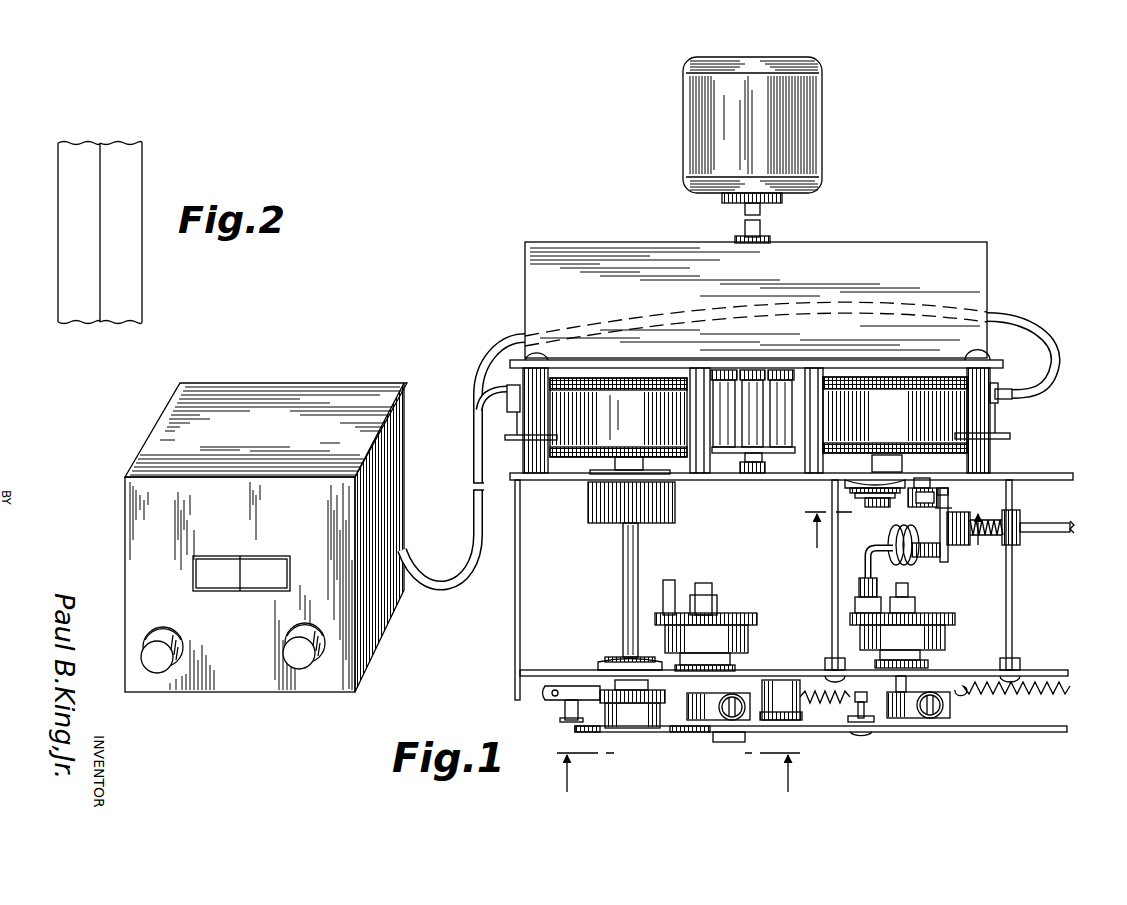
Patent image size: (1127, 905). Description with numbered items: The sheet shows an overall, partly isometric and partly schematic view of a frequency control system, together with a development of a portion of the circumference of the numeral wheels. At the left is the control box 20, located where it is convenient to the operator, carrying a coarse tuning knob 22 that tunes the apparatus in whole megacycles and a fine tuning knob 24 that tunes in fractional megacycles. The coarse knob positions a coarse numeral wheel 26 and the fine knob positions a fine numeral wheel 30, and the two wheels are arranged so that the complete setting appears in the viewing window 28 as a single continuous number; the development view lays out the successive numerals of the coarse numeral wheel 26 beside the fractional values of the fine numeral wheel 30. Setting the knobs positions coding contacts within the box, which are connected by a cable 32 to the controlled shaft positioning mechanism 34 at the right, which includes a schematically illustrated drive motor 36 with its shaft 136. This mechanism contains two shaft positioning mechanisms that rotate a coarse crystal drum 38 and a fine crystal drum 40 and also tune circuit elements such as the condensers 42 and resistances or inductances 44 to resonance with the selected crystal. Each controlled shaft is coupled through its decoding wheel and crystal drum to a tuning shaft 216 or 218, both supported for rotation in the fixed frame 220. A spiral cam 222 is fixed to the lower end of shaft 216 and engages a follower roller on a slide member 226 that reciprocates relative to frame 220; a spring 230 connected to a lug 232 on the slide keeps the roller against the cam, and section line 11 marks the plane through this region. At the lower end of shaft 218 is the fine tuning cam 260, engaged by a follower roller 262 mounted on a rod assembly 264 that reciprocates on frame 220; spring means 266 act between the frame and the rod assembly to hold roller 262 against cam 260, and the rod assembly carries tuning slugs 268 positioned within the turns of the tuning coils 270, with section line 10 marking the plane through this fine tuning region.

In FIG. 1, the section line 10- 10 is at (893, 539).
In FIG. 1, the section line 11- 11 is at (678, 772).
In FIG. 1, the control box 20 is at (266, 523).
In FIG. 1, the coarse tuning knob 22 is at (163, 625).
In FIG. 1, the fine tuning knob 24 is at (315, 620).
In FIG. 2, the coarse numeral wheel 26 is at (58, 286).
In FIG. 1, the coarse numeral wheel 26 is at (216, 548).
In FIG. 1, the viewing window 28 is at (241, 578).
In FIG. 2, the fine numeral wheel 30 is at (142, 294).
In FIG. 1, the fine numeral wheel 30 is at (274, 548).
In FIG. 1, the cable 32 is at (463, 440).
In FIG. 1, the controlled shaft positioning mechanism 34 is at (900, 246).
In FIG. 1, the drive motor 36 is at (826, 124).
In FIG. 1, the motor shaft 136 is at (761, 232).
In FIG. 1, the coarse crystal drum 38 is at (636, 428).
In FIG. 1, the fine crystal drum 40 is at (898, 425).
In FIG. 1, the condensers 42 is at (938, 637).
In FIG. 1, the resistances or inductances 44 is at (903, 562).
In FIG. 1, the tuning shaft 216 is at (622, 570).
In FIG. 1, the tuning shaft 218 is at (876, 512).
In FIG. 1, the fixed frame 220 is at (1013, 573).
In FIG. 1, the spiral cam 222 is at (650, 736).
In FIG. 1, the slide member 226 is at (920, 722).
In FIG. 1, the spring 230 is at (812, 705).
In FIG. 1, the lug 232 is at (860, 724).
In FIG. 1, the fine tuning cam 260 is at (850, 501).
In FIG. 1, the follower roller 262 is at (940, 486).
In FIG. 1, the rod assembly 264 is at (1062, 523).
In FIG. 1, the spring means 266 is at (1012, 518).
In FIG. 1, the tuning slugs 268 is at (936, 556).
In FIG. 1, the tuning coils 270 is at (915, 527).